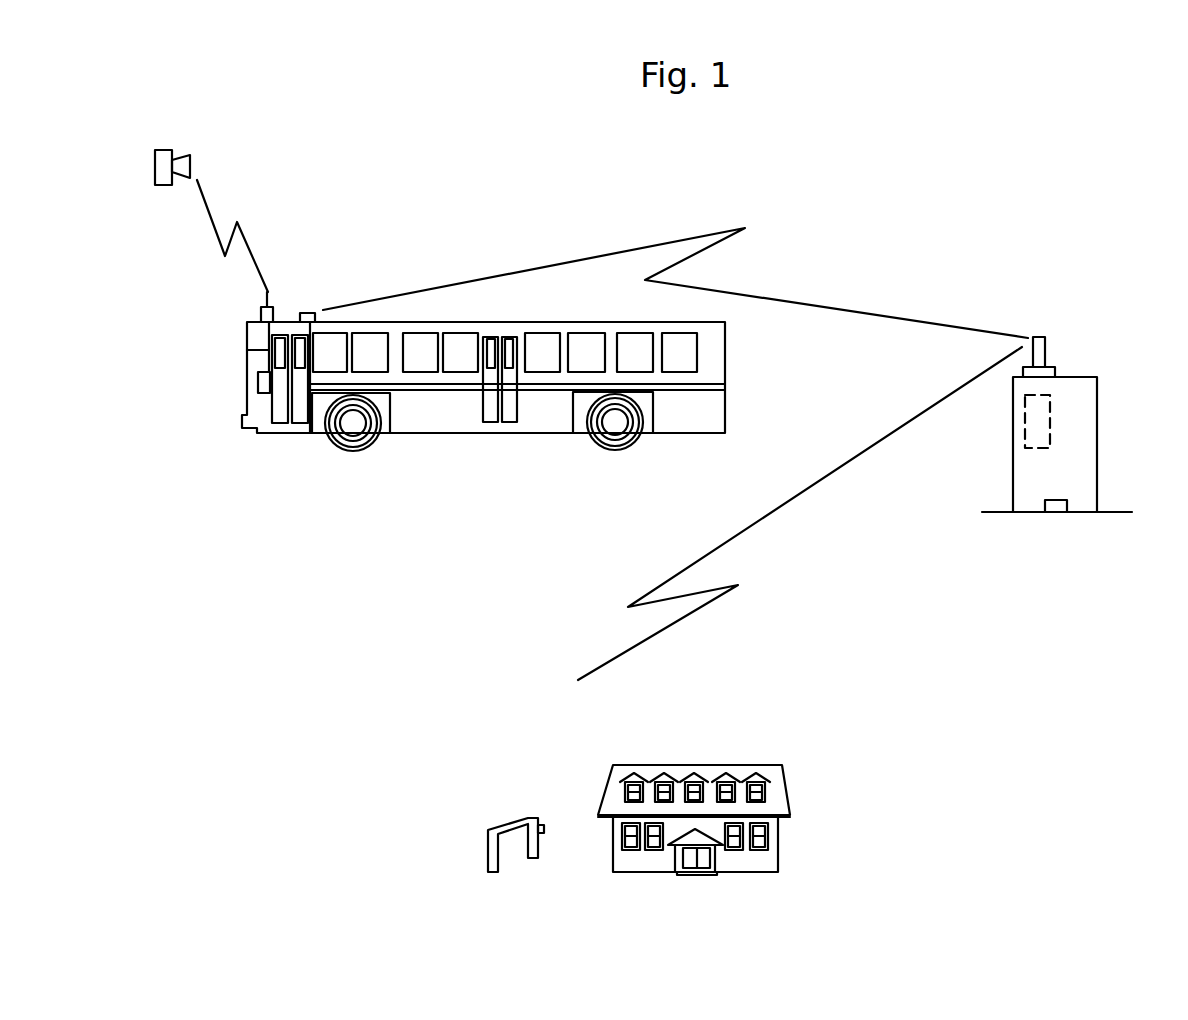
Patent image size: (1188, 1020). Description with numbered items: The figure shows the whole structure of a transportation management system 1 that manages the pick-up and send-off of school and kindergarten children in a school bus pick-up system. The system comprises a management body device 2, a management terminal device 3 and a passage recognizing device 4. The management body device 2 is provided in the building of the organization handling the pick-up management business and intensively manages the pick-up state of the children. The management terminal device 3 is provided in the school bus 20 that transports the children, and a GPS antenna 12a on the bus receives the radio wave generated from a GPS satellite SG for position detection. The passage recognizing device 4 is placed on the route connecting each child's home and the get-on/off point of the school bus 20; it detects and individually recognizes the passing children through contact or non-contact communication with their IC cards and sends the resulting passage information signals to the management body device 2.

The GPS satellite SG is at (166, 150).
The GPS antenna 12a is at (268, 292).
The management terminal device 3 is at (242, 387).
The vehicle (school bus) 20 is at (713, 360).
The transportation management system 1 is at (1088, 350).
The management body device 2 is at (1025, 413).
The passage recognizing device 4 is at (544, 829).